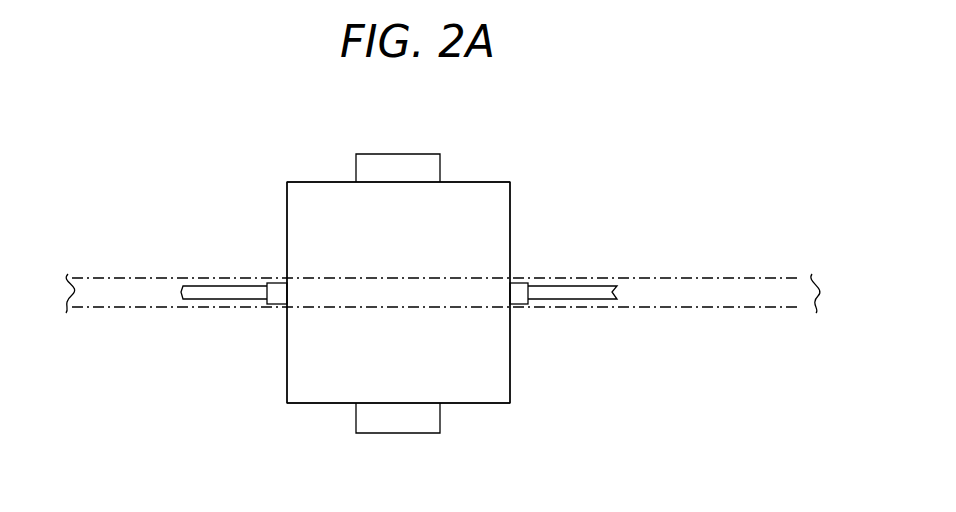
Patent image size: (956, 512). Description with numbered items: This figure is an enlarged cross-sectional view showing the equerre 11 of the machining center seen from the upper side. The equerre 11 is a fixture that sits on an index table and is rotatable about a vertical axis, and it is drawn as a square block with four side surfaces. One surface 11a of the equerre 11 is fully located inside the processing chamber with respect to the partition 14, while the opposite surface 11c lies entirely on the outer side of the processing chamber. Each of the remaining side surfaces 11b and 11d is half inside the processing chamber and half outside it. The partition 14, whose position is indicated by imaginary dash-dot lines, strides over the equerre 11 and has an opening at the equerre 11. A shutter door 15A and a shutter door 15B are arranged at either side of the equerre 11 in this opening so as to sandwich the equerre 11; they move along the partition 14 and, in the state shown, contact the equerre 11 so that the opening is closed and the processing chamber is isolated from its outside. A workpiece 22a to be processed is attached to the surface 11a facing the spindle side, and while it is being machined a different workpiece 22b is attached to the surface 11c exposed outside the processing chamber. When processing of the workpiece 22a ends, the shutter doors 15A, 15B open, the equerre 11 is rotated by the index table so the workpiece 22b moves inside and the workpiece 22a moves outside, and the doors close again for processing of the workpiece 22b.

The equerre 11 is at (318, 172).
The surface of equerre 11a is at (483, 182).
The side surface of equerre 11b is at (508, 237).
The surface of equerre 11c is at (313, 403).
The side surface of equerre 11d is at (287, 210).
The workpiece 22a is at (385, 154).
The workpiece 22b is at (427, 418).
The shutter door 15A is at (212, 288).
The shutter door 15B is at (573, 293).
The partition 14 is at (688, 278).